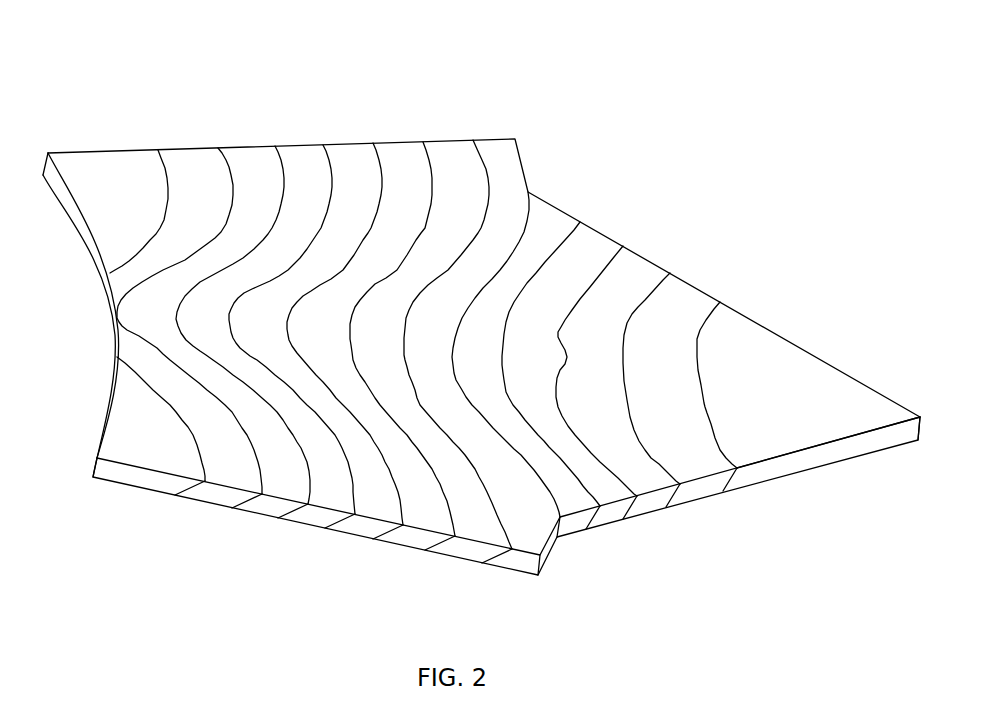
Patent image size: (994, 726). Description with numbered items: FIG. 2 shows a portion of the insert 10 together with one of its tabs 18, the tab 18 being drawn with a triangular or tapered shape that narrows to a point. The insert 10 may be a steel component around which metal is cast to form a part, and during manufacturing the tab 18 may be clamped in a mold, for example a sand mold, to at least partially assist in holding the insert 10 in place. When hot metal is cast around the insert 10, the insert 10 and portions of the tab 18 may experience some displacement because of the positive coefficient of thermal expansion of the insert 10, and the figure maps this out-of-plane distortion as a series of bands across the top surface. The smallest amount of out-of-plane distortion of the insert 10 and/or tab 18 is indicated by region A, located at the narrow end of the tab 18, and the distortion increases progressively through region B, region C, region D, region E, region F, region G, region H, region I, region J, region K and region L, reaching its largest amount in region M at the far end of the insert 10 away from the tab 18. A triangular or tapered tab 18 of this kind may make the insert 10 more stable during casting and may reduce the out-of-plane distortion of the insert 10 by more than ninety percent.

The insert 10 is at (260, 517).
The tab 18 is at (750, 487).
The region A is at (815, 373).
The region B is at (687, 300).
The region C is at (635, 273).
The region D is at (593, 247).
The region E is at (550, 220).
The region F is at (508, 163).
The region G is at (455, 163).
The region H is at (402, 163).
The region I is at (352, 163).
The region J is at (302, 163).
The region K is at (250, 163).
The region L is at (185, 163).
The region M is at (105, 162).